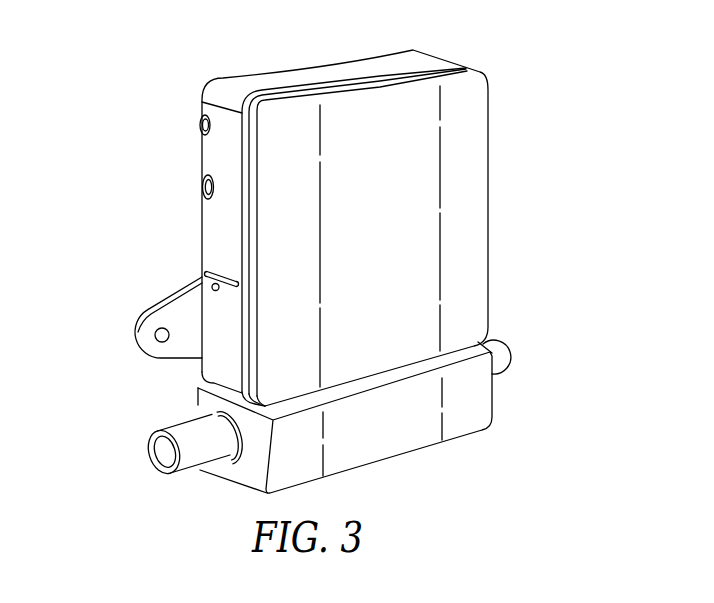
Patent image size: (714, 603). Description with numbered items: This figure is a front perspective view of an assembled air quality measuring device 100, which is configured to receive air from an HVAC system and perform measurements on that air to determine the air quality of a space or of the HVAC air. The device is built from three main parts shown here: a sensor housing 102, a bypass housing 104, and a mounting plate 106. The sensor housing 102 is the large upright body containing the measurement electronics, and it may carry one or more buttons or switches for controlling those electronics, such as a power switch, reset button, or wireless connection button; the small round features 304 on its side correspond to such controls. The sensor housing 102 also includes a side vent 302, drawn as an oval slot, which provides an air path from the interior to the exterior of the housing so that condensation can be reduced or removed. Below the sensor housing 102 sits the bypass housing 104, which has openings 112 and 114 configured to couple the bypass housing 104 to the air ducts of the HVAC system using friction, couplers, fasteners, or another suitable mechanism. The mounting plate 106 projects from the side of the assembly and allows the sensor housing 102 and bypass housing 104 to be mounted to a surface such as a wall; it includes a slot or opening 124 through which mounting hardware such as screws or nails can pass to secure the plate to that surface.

The air quality measuring device 100 is at (154, 38).
The sensor housing 102 is at (382, 225).
The bypass housing 104 is at (400, 435).
The mounting plate 106 is at (167, 303).
The opening 112 is at (510, 347).
The opening 114 is at (167, 450).
The slot or opening 124 is at (151, 338).
The side vent 302 is at (220, 273).
The buttons 304 is at (200, 123).